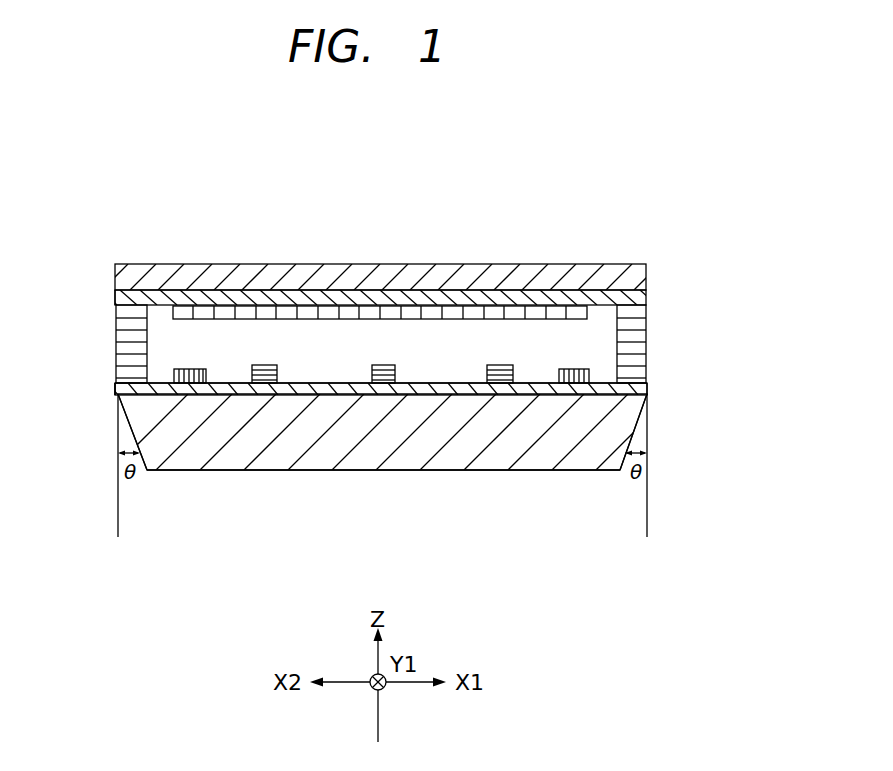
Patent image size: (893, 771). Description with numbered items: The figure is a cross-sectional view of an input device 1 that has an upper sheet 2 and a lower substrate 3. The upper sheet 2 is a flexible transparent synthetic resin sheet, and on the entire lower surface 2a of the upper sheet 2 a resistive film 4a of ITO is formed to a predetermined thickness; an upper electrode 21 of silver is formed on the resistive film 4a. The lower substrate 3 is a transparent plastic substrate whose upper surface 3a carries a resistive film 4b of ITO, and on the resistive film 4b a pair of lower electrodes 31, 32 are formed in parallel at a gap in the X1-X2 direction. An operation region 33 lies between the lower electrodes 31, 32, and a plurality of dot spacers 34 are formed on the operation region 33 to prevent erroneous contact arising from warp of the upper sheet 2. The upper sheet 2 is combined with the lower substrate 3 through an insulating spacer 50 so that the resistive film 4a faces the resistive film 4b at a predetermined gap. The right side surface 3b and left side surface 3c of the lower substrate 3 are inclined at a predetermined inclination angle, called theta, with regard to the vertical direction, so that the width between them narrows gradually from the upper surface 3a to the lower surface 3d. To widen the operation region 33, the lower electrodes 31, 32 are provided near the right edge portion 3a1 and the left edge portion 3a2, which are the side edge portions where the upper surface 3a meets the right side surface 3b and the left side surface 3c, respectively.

The input device 1 is at (331, 184).
The upper sheet 2 is at (502, 266).
The lower surface 2a is at (627, 288).
The resistive film 4a is at (121, 301).
The resistive film 4b is at (122, 388).
The insulating spacer 50 is at (137, 337).
The upper electrode 21 is at (402, 313).
The lower electrode 32 is at (208, 376).
The dot spacer 34 is at (378, 365).
The lower electrode 31 is at (633, 371).
The operation region 33 is at (433, 385).
The upper surface 3a is at (648, 391).
The right edge portion 3a1 is at (650, 396).
The left edge portion 3a2 is at (118, 396).
The lower substrate 3 is at (432, 471).
The right side surface 3b is at (613, 462).
The left side surface 3c is at (137, 433).
The lower surface 3d is at (350, 471).